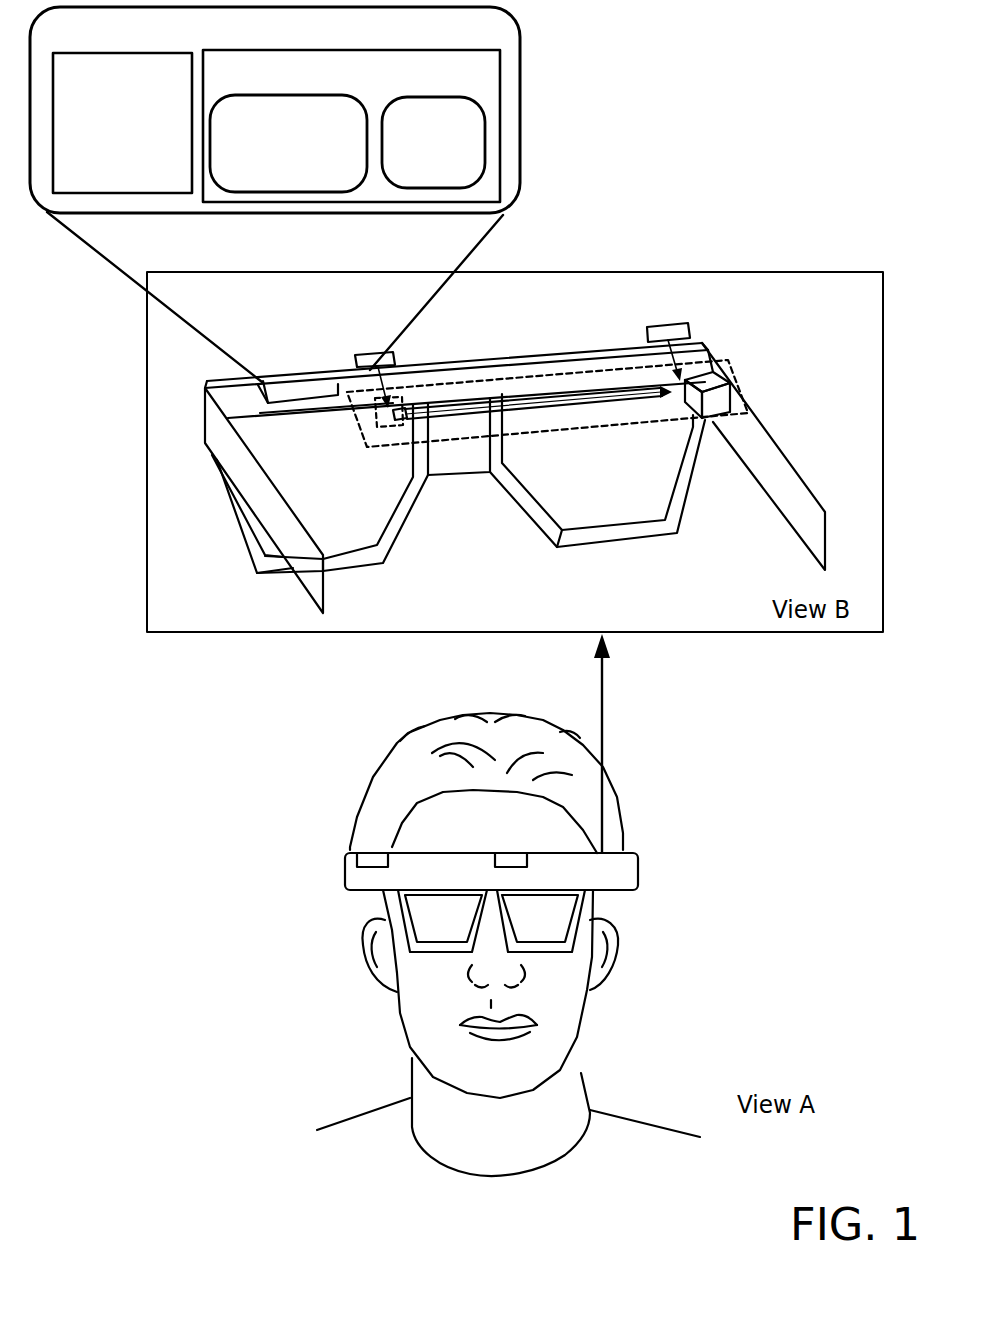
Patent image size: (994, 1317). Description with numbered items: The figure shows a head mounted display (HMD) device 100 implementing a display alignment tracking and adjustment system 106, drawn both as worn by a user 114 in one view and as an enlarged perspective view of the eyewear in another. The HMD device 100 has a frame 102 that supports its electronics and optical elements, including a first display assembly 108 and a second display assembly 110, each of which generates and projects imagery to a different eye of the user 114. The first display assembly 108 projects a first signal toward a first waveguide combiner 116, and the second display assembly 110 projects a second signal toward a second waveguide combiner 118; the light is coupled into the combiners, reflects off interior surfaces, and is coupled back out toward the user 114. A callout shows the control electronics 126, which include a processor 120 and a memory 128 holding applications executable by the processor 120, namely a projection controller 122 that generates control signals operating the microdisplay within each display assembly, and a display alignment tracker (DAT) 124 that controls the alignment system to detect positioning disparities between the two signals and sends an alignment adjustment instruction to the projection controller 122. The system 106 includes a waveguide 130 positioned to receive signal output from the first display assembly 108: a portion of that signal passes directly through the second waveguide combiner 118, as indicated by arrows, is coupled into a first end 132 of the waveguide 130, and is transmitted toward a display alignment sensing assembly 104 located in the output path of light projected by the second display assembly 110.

The head mounted display (HMD) device 100 is at (283, 319).
The frame 102 is at (387, 545).
The display alignment sensing assembly 104 is at (715, 388).
The display alignment tracking and adjustment system 106 is at (517, 380).
The first display assembly 108 is at (393, 353).
The second display assembly 110 is at (690, 331).
The user 114 is at (367, 1112).
The first waveguide combiner 116 is at (622, 481).
The second waveguide combiner 118 is at (353, 492).
The processor 120 is at (143, 152).
The projection controller 122 is at (307, 184).
The display alignment tracker (DAT) 124 is at (452, 171).
The control electronics 126 is at (297, 46).
The memory 128 is at (351, 126).
The waveguide 130 is at (429, 413).
The first end 132 is at (377, 408).